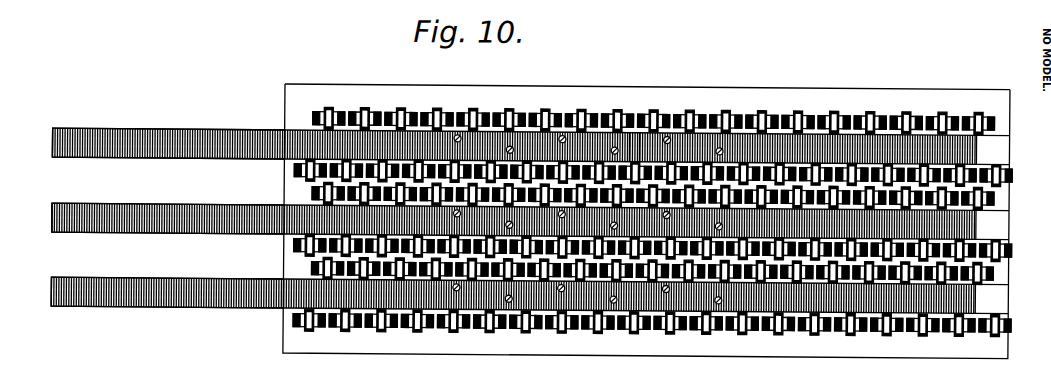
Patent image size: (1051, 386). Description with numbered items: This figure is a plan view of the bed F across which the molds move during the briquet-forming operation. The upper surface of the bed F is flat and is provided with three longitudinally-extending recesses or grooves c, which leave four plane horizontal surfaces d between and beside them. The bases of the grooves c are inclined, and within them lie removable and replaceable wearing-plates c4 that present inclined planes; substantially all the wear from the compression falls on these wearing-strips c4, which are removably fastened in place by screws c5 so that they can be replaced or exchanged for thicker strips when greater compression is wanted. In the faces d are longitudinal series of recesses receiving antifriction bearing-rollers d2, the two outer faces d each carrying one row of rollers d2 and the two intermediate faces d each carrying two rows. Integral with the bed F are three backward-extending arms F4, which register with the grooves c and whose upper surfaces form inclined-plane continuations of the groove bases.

The bed F is at (818, 92).
The backward-extending arms F4 is at (157, 136).
The recesses or grooves c is at (977, 144).
The wearing-plates c4 is at (636, 141).
The screws c5 is at (561, 134).
The plane horizontal surfaces d is at (997, 197).
The antifriction bearing-rollers d2 is at (355, 110).